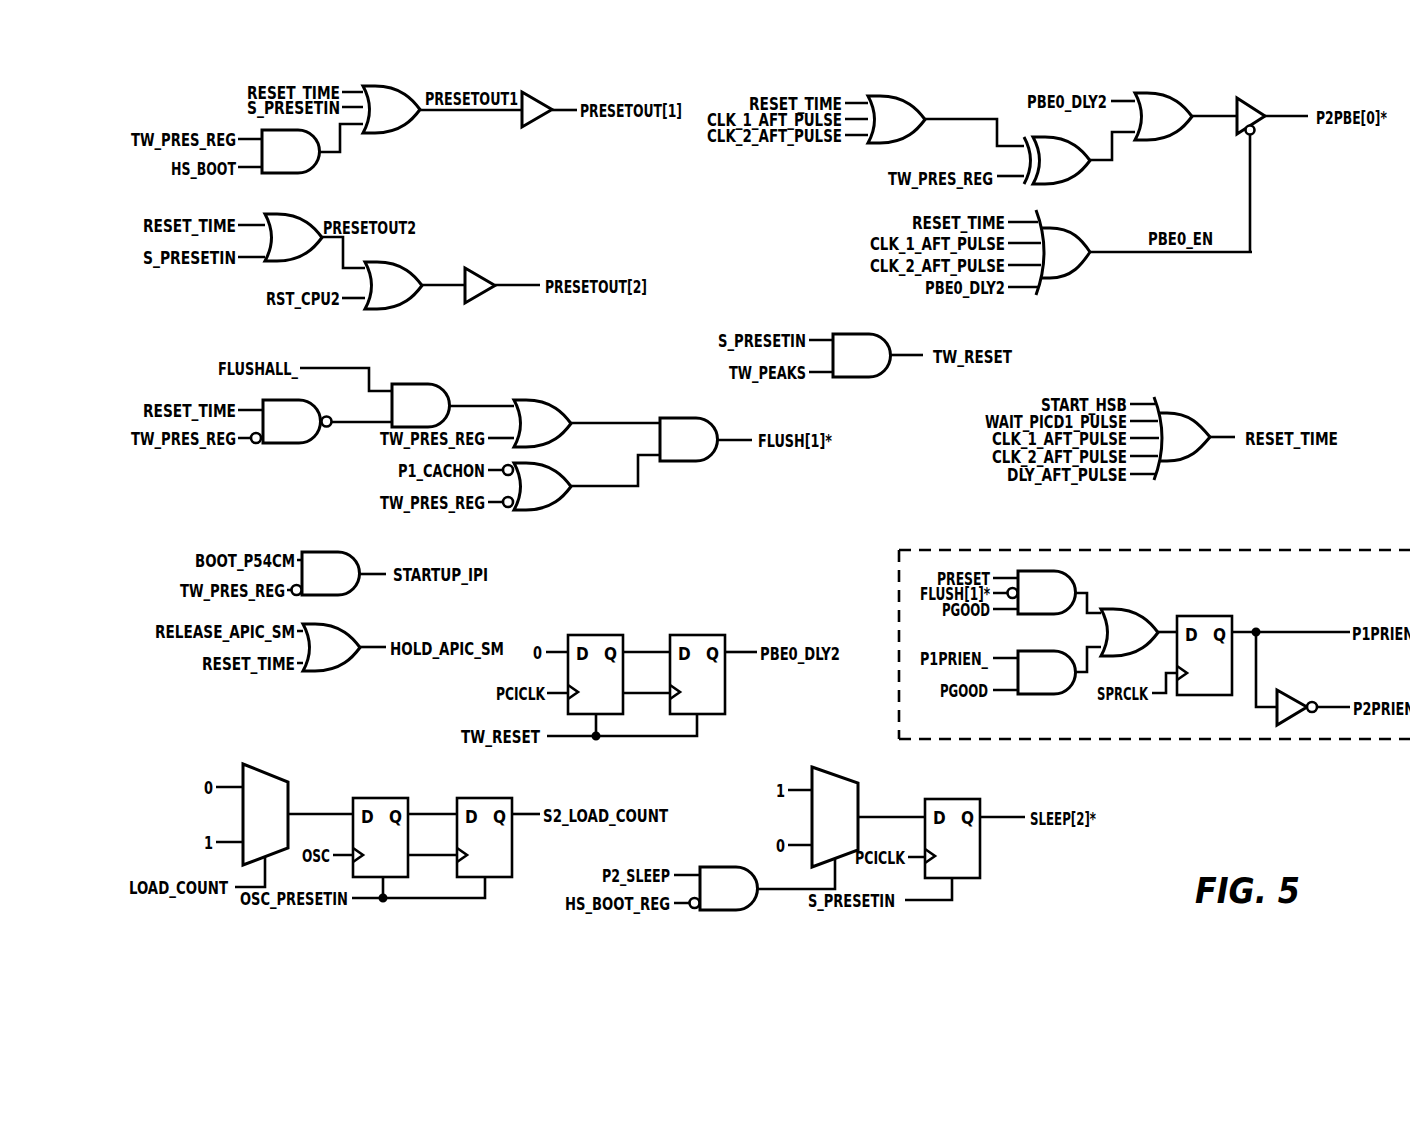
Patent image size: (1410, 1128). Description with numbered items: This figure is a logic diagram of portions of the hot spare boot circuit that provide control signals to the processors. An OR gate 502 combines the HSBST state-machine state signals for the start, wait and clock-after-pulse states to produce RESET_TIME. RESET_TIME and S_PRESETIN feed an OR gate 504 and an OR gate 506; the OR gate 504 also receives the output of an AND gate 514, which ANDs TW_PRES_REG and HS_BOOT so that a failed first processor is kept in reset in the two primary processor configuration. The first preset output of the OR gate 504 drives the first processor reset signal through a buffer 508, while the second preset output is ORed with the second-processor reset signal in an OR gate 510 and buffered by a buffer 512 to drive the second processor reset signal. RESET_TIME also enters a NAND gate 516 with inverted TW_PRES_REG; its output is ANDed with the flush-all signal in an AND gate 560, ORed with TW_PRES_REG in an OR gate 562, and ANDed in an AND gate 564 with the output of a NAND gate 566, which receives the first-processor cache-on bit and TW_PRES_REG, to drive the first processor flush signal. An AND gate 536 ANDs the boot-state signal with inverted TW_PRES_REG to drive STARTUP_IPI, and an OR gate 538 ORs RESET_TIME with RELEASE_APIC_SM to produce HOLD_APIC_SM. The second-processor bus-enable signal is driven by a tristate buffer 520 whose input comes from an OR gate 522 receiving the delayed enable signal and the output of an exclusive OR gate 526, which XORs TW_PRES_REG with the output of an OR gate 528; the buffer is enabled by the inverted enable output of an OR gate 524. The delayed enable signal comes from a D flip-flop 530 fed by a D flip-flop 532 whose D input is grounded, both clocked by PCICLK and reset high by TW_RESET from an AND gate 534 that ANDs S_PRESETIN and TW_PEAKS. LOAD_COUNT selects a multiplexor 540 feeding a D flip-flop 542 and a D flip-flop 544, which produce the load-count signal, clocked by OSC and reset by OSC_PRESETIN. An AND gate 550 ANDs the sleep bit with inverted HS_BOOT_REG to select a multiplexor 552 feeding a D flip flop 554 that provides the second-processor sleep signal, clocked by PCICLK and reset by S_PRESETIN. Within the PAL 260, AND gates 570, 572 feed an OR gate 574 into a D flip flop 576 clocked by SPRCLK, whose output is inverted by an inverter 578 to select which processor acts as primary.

The PAL 260 is at (1228, 548).
The OR gate 502 is at (1193, 414).
The OR gate 504 is at (388, 133).
The OR gate 506 is at (298, 216).
The buffer 508 is at (536, 96).
The OR gate 510 is at (378, 306).
The buffer 512 is at (478, 270).
The AND gate 514 is at (310, 172).
The NAND gate 516 is at (280, 444).
The tristate buffer 520 is at (1250, 100).
The OR gate 522 is at (1168, 95).
The OR gate 524 is at (1066, 229).
The exclusive OR gate 526 is at (1073, 183).
The OR gate 528 is at (903, 98).
The D flip-flop 530 is at (700, 635).
The D flip-flop 532 is at (597, 635).
The AND gate 534 is at (873, 335).
The AND gate 536 is at (319, 553).
The OR gate 538 is at (338, 625).
The multiplexor 540 is at (263, 774).
The D flip-flop 542 is at (384, 799).
The D flip-flop 544 is at (487, 799).
The AND gate 550 is at (730, 912).
The multiplexor 552 is at (833, 776).
The D flip flop 554 is at (953, 800).
The AND gate 560 is at (413, 384).
The OR gate 562 is at (533, 401).
The AND gate 564 is at (678, 416).
The NAND gate 566 is at (533, 509).
The AND gate 570 is at (1058, 572).
The AND gate 572 is at (1036, 696).
The OR gate 574 is at (1133, 610).
The D flip flop 576 is at (1218, 617).
The inverter 578 is at (1283, 698).